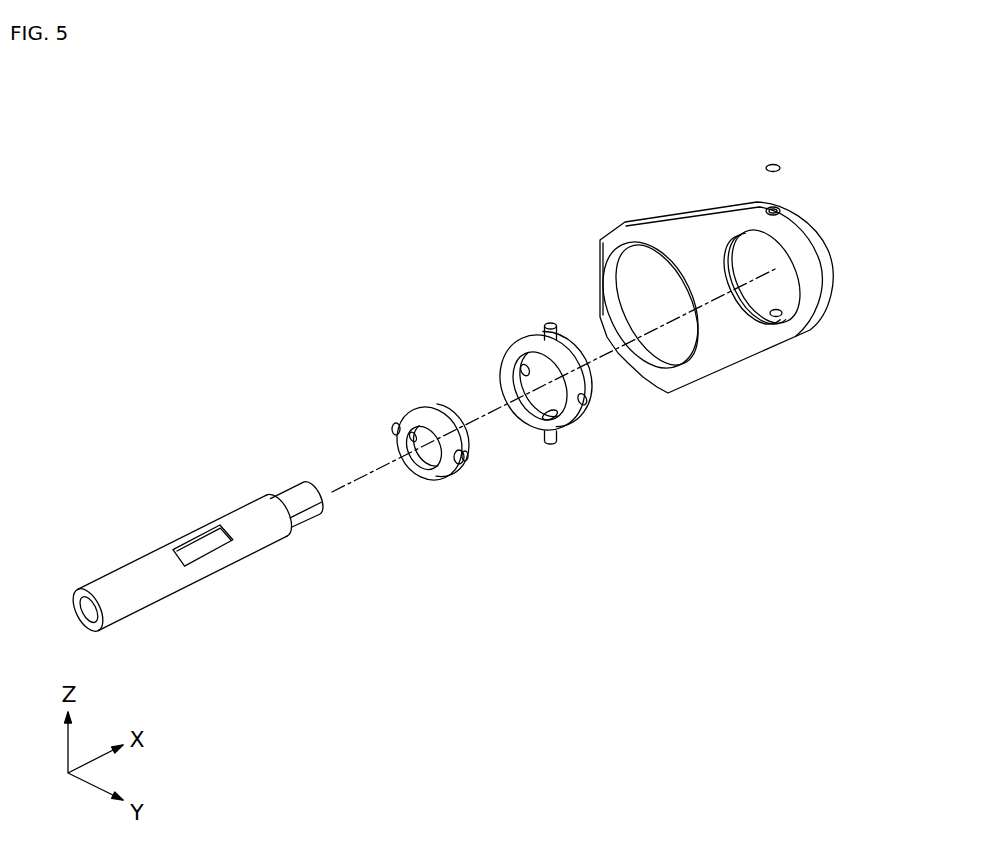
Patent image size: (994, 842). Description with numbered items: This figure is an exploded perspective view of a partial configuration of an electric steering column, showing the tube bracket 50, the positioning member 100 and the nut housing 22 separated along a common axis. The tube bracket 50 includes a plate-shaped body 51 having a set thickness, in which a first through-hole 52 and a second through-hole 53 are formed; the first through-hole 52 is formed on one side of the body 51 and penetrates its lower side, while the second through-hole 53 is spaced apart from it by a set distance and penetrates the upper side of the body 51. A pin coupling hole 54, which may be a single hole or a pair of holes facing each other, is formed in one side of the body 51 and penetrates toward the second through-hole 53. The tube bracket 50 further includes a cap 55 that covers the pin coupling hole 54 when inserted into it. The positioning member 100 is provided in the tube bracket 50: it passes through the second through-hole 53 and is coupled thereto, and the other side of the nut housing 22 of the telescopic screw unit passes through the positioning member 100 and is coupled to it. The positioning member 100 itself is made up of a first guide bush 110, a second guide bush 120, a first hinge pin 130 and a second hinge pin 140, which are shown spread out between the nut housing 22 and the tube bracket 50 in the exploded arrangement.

The positioning member 100 is at (373, 198).
The nut housing 22 is at (190, 592).
The tube bracket 50 is at (695, 209).
The body 51 is at (747, 342).
The first through-hole 52 is at (633, 279).
The second through-hole 53 is at (764, 257).
The pin coupling hole 54 is at (784, 207).
The cap 55 is at (773, 207).
The first guide bush 110 is at (516, 335).
The second guide bush 120 is at (410, 403).
The first hinge pin 130 is at (545, 322).
The second hinge pin 140 is at (394, 428).